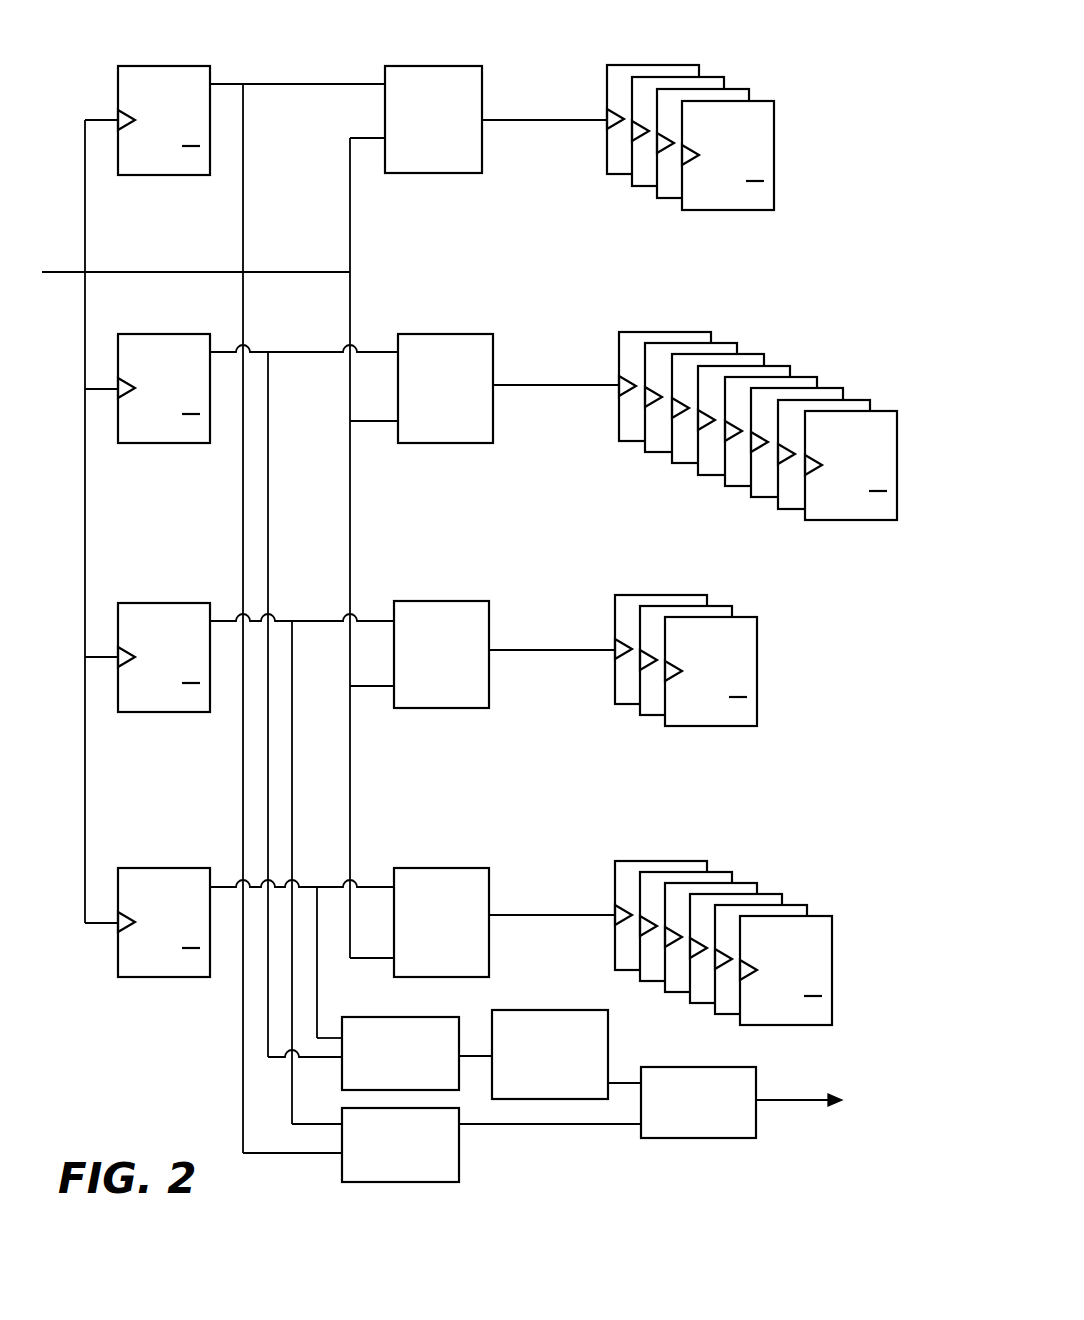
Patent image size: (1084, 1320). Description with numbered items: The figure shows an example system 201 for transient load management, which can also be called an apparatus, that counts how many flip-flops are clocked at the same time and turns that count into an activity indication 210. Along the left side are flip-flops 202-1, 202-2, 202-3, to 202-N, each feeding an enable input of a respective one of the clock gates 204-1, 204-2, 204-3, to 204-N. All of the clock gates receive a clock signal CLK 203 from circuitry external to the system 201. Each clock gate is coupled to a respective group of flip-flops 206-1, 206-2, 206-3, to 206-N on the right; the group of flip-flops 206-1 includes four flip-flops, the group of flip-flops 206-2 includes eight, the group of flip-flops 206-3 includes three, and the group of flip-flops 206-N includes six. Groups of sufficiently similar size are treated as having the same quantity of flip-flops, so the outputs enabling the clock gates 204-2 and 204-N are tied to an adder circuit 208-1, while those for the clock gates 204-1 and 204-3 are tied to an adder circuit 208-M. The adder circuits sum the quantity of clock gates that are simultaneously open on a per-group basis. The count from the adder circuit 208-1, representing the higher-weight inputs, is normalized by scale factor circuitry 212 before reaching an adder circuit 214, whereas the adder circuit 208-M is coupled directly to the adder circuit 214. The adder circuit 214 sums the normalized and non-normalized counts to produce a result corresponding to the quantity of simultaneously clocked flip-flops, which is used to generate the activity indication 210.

The system 201 is at (834, 64).
The flip-flop 202-1 is at (165, 66).
The flip-flop 202-2 is at (165, 334).
The flip-flop 202-3 is at (165, 603).
The flip-flop 202-N is at (165, 868).
The clock signal CLK 203 is at (70, 246).
The clock gate 204-1 is at (470, 173).
The clock gate 204-2 is at (481, 443).
The clock gate 204-3 is at (478, 708).
The clock gate 204-N is at (470, 868).
The group of flip-flops 206-1 is at (774, 217).
The group of flip-flops 206-2 is at (898, 525).
The group of flip-flops 206-3 is at (757, 735).
The group of flip-flops 206-N is at (832, 855).
The adder circuit 208-1 is at (388, 1017).
The adder circuit 208-M is at (459, 1163).
The activity indication 210 is at (898, 1076).
The scale factor circuitry 212 is at (522, 1010).
The adder circuit 214 is at (747, 1138).